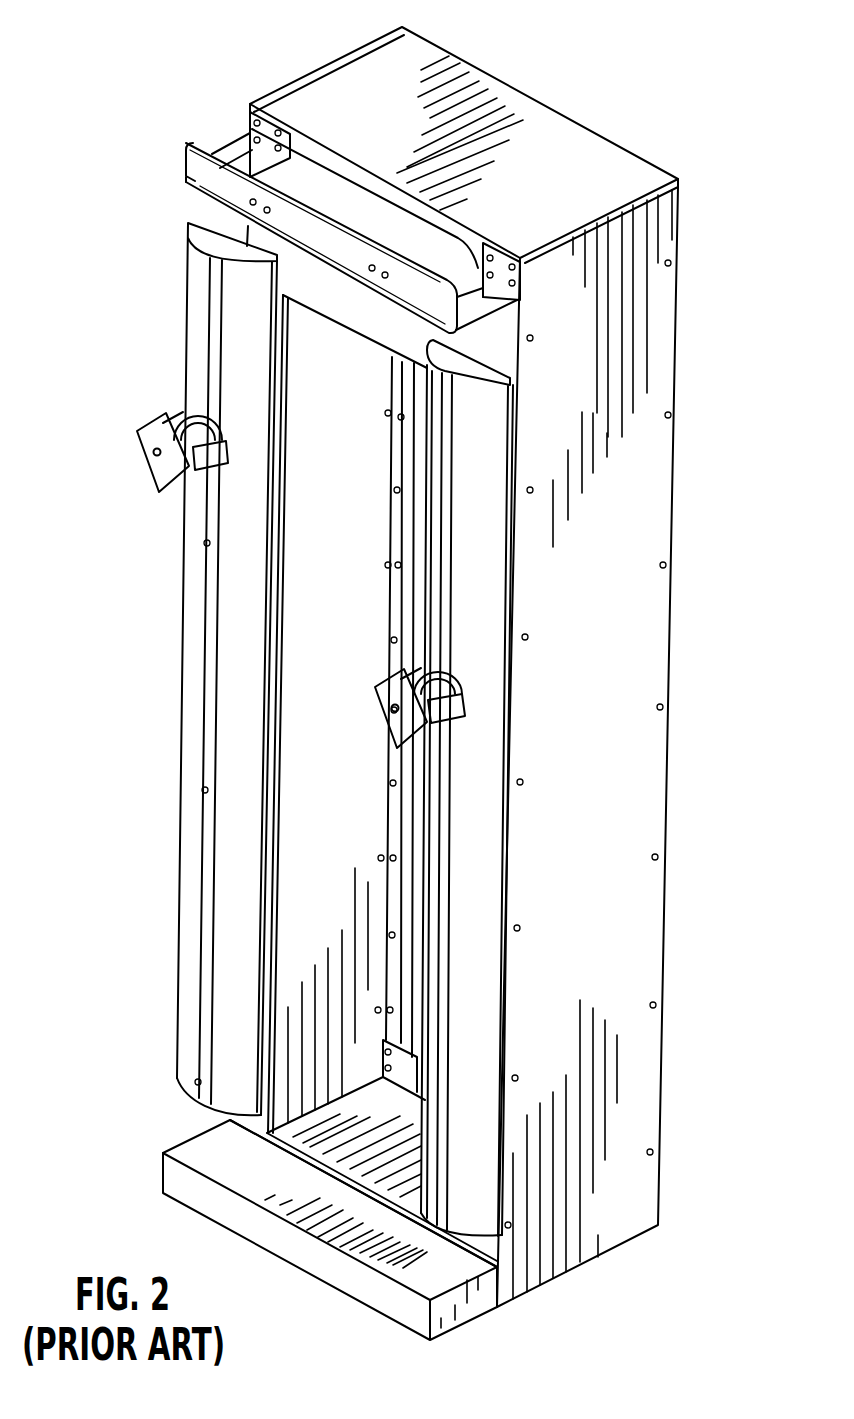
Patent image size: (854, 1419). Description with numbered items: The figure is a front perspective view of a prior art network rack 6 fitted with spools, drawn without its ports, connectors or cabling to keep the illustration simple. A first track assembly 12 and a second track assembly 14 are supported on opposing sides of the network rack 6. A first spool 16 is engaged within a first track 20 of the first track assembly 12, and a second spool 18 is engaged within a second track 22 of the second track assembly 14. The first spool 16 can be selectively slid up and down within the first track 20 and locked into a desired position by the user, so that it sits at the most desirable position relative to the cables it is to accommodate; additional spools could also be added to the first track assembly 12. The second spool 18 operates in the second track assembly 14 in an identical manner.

The network rack 6 is at (716, 355).
The first track assembly 12 is at (238, 548).
The second track assembly 14 is at (476, 800).
The first spool 16 is at (148, 507).
The second spool 18 is at (377, 727).
The first track 20 is at (217, 690).
The second track 22 is at (452, 537).